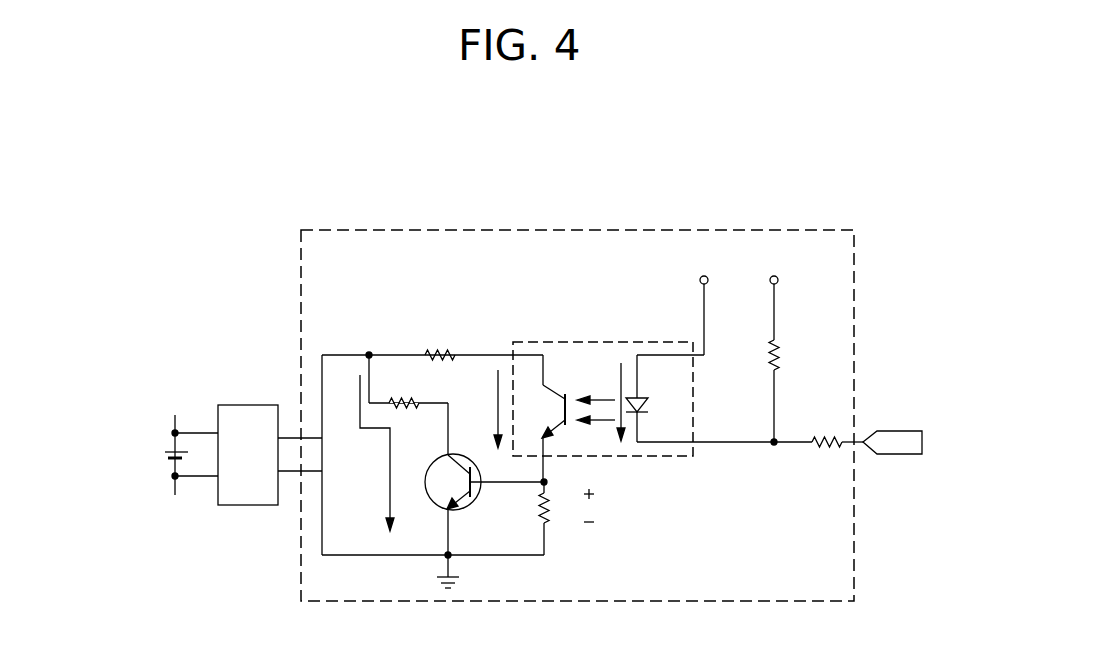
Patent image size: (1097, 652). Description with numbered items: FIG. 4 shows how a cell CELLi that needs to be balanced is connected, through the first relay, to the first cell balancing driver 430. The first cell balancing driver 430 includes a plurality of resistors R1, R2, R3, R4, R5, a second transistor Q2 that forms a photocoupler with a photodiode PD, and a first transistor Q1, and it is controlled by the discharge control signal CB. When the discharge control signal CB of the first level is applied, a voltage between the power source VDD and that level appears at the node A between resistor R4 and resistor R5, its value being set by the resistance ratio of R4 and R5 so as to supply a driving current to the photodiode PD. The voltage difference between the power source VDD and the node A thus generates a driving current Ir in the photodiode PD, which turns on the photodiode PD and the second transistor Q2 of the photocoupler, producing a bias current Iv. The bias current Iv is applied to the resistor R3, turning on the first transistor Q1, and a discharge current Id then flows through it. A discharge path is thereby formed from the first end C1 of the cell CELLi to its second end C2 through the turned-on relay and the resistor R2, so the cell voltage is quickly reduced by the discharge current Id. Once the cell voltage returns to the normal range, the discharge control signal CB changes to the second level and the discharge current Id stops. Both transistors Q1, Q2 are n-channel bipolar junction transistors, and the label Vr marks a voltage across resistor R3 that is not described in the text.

The first cell balancing driver 430 is at (728, 230).
The cell CELLi is at (167, 453).
The first end of the cell C1 is at (195, 422).
The second end of the cell C2 is at (195, 489).
The resistor R1 is at (441, 343).
The resistor R2 is at (406, 393).
The resistor R3 is at (563, 518).
The resistor R4 is at (837, 429).
The resistor R5 is at (790, 391).
The first transistor Q1 is at (469, 482).
The second transistor Q2 is at (541, 418).
The photodiode PD is at (656, 398).
The power source VDD is at (717, 303).
The node A is at (724, 457).
The discharge control signal CB is at (912, 444).
The discharge current Id is at (377, 453).
The bias current Iv is at (487, 409).
The driving current Ir is at (601, 401).
The reference voltage Vr is at (603, 505).